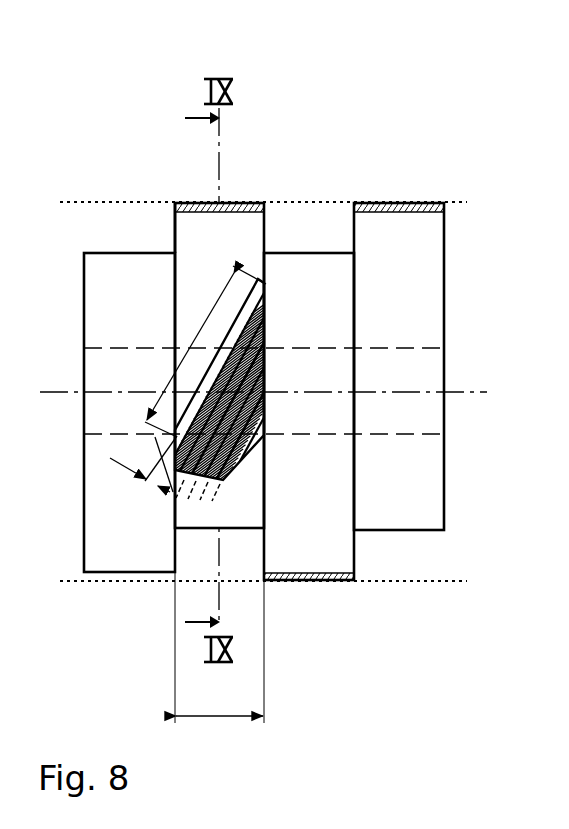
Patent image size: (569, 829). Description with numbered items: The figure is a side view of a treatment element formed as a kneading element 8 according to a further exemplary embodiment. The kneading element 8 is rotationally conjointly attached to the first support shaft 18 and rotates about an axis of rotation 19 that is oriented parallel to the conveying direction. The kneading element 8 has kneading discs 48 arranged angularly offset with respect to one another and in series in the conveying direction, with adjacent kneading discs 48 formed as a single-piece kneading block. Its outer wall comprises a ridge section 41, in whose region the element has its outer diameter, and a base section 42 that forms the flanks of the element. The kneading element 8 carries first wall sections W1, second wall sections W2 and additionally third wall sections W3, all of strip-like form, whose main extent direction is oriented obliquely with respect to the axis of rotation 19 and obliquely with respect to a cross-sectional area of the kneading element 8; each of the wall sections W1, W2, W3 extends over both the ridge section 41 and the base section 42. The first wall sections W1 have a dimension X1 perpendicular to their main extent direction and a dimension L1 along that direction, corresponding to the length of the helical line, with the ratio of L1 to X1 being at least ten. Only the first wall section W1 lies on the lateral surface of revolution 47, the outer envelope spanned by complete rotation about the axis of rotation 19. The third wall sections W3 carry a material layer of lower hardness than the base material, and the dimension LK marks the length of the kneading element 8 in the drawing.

The kneading element 8 is at (102, 190).
The first support shaft 18 is at (96, 436).
The axis of rotation 19 is at (467, 395).
The ridge section 41 is at (247, 203).
The base section 42 is at (333, 288).
The lateral surface of revolution 47 is at (450, 202).
The kneading disc 48 is at (176, 205).
The first wall section W1 is at (236, 433).
The second wall section W2 is at (226, 458).
The third wall section W3 is at (222, 472).
The dimension along main extent direction L1 is at (205, 351).
The dimension perpendicular to main extent direction X1 is at (143, 460).
The section length LK is at (219, 625).